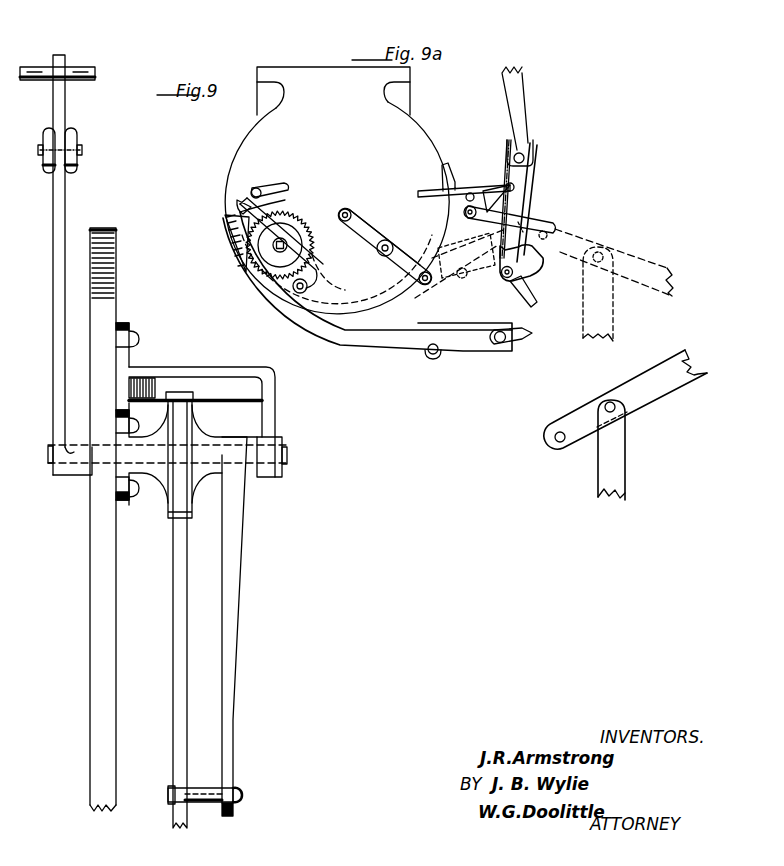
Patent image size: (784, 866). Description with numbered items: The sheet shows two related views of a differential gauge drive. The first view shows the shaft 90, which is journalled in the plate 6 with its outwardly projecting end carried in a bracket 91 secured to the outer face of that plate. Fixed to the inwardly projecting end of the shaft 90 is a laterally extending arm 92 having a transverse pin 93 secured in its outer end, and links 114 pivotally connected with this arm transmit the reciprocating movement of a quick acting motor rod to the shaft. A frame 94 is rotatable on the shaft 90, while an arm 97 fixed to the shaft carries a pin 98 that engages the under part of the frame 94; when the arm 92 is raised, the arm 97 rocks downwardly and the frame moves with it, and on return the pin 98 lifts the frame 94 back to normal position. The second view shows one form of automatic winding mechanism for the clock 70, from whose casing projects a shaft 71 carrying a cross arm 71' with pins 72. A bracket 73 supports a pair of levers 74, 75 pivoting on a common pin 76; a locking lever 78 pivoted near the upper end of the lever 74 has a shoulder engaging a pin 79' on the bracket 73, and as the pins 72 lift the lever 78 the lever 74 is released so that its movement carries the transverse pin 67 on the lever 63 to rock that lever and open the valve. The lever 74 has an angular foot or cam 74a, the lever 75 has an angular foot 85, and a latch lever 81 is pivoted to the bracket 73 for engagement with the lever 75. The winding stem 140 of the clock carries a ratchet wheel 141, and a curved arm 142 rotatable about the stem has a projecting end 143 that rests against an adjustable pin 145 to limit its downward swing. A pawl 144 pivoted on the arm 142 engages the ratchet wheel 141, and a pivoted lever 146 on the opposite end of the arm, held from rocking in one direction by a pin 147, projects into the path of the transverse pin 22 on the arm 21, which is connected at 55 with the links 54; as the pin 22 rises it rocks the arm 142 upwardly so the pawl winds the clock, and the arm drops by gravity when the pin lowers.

In FIG. 9, the transverse pin 93 is at (96, 72).
In FIG. 9, the links 114 is at (46, 130).
In FIG. 9, the laterally extending arm 92 is at (67, 205).
In FIG. 9, the bracket 91 is at (276, 372).
In FIG. 9, the shaft 90 is at (288, 453).
In FIG. 9, the plate 6 is at (90, 550).
In FIG. 9, the frame 94 is at (172, 629).
In FIG. 9, the arm 97 is at (238, 647).
In FIG. 9, the pin 98 is at (205, 787).
In FIG. 9A, the clock 70 is at (337, 190).
In FIG. 9A, the bracket 73 is at (455, 170).
In FIG. 9A, the pivoted lever 74 is at (507, 148).
In FIG. 9A, the locking lever 78 is at (492, 183).
In FIG. 9A, the lever 63 is at (525, 103).
In FIG. 9A, the transverse pin 67 is at (531, 143).
In FIG. 9A, the pivoted lever 75 is at (537, 170).
In FIG. 9A, the latch lever 81 is at (495, 210).
In FIG. 9A, the projecting end 143 is at (232, 216).
In FIG. 9A, the adjustable pin 145 is at (258, 200).
In FIG. 9A, the ratchet wheel 141 is at (311, 229).
In FIG. 9A, the pins 72 is at (350, 210).
In FIG. 9A, the cross arm 71' is at (384, 229).
In FIG. 9A, the shaft 71 is at (384, 246).
In FIG. 9A, the pin 79' is at (499, 223).
In FIG. 9A, the winding stem 140 is at (273, 250).
In FIG. 9A, the pawl 144 is at (311, 266).
In FIG. 9A, the common pin 76 is at (505, 279).
In FIG. 9A, the foot or cam 74a is at (535, 265).
In FIG. 9A, the angular foot 85 is at (530, 304).
In FIG. 9A, the curved arm 142 is at (381, 354).
In FIG. 9A, the pin 147 is at (437, 359).
In FIG. 9A, the pivoted lever 146 is at (486, 344).
In FIG. 9A, the pivotal connection 55 is at (612, 401).
In FIG. 9A, the arm 21 is at (642, 400).
In FIG. 9A, the transverse pin 22 is at (560, 444).
In FIG. 9A, the links 54 is at (627, 485).